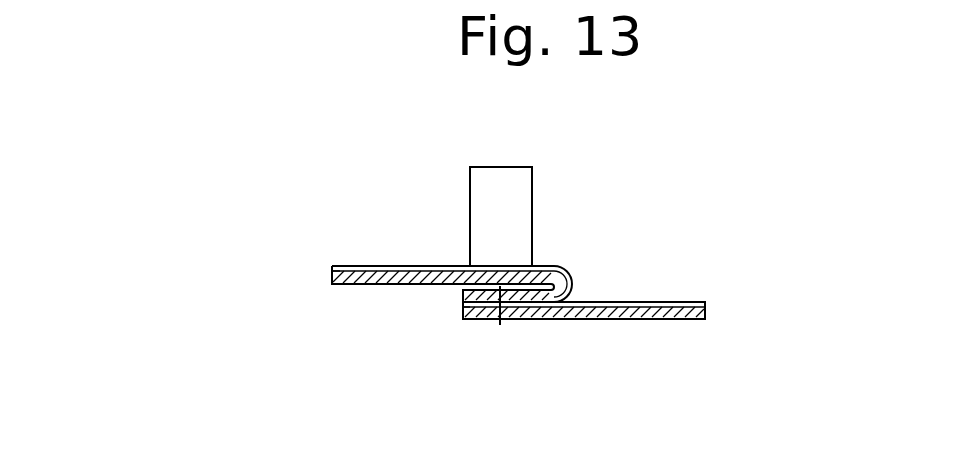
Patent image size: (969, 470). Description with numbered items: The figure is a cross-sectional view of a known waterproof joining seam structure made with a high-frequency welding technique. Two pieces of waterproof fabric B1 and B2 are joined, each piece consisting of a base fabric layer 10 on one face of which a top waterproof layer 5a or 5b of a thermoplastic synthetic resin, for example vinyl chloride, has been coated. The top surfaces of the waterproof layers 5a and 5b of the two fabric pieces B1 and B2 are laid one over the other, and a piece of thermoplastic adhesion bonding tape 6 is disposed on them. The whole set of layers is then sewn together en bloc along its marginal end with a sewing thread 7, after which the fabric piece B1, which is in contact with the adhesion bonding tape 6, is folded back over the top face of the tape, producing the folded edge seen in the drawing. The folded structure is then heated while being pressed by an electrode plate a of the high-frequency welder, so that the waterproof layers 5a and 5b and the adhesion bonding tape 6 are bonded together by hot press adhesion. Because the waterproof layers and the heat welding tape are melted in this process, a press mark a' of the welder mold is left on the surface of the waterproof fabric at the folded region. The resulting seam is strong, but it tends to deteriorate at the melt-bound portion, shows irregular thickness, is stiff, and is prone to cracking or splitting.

The electrode plate a is at (510, 182).
The press mark a' is at (563, 246).
The top waterproof layer 5a is at (404, 264).
The top waterproof layer 5b is at (688, 300).
The thermoplastic adhesion bonding tape 6 is at (463, 290).
The sewing thread 7 is at (505, 324).
The base fabric layer 10 is at (347, 286).
The waterproof fabric piece B1 is at (326, 272).
The waterproof fabric piece B2 is at (722, 309).